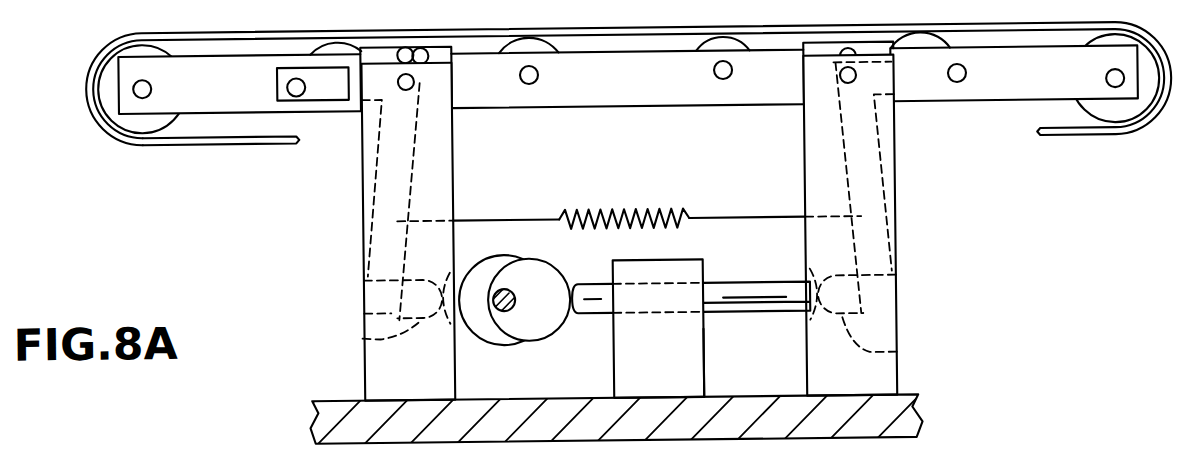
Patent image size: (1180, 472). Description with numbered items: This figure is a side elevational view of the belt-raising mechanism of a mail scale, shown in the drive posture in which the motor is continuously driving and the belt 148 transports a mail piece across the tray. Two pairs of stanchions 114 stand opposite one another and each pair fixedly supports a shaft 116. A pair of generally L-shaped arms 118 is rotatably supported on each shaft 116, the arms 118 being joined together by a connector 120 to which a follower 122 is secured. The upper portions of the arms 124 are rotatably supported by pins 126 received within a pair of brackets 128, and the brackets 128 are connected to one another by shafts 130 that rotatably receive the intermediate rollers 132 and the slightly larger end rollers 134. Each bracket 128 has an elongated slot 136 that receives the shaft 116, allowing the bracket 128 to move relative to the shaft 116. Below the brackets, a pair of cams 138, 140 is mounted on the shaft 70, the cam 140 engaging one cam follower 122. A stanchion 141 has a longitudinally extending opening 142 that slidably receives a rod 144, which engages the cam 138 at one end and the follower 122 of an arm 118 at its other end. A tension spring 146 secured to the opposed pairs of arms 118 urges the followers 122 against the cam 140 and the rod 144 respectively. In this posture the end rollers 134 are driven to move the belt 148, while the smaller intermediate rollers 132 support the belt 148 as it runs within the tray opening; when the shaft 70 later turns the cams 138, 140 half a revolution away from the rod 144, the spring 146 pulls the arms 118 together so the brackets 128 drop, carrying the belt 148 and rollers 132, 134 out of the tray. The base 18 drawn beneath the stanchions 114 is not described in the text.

The base 18 is at (916, 422).
The shaft 70 is at (510, 291).
The stanchion 114 is at (361, 369).
The shaft 116 is at (411, 88).
The L-shaped arm 118 is at (363, 187).
The connector 120 is at (362, 282).
The follower 122 is at (361, 336).
The upper portion of arm 124 is at (314, 90).
The pin 126 is at (136, 92).
The bracket 128 is at (691, 109).
The shaft 130 is at (538, 79).
The intermediate roller 132 is at (342, 45).
The end roller 134 is at (108, 84).
The elongated slot 136 is at (427, 51).
The cam 138 is at (547, 336).
The cam 140 is at (479, 346).
The stanchion 141 is at (705, 386).
The opening 142 is at (703, 271).
The rod 144 is at (779, 315).
The tension spring 146 is at (656, 217).
The belt 148 is at (188, 142).